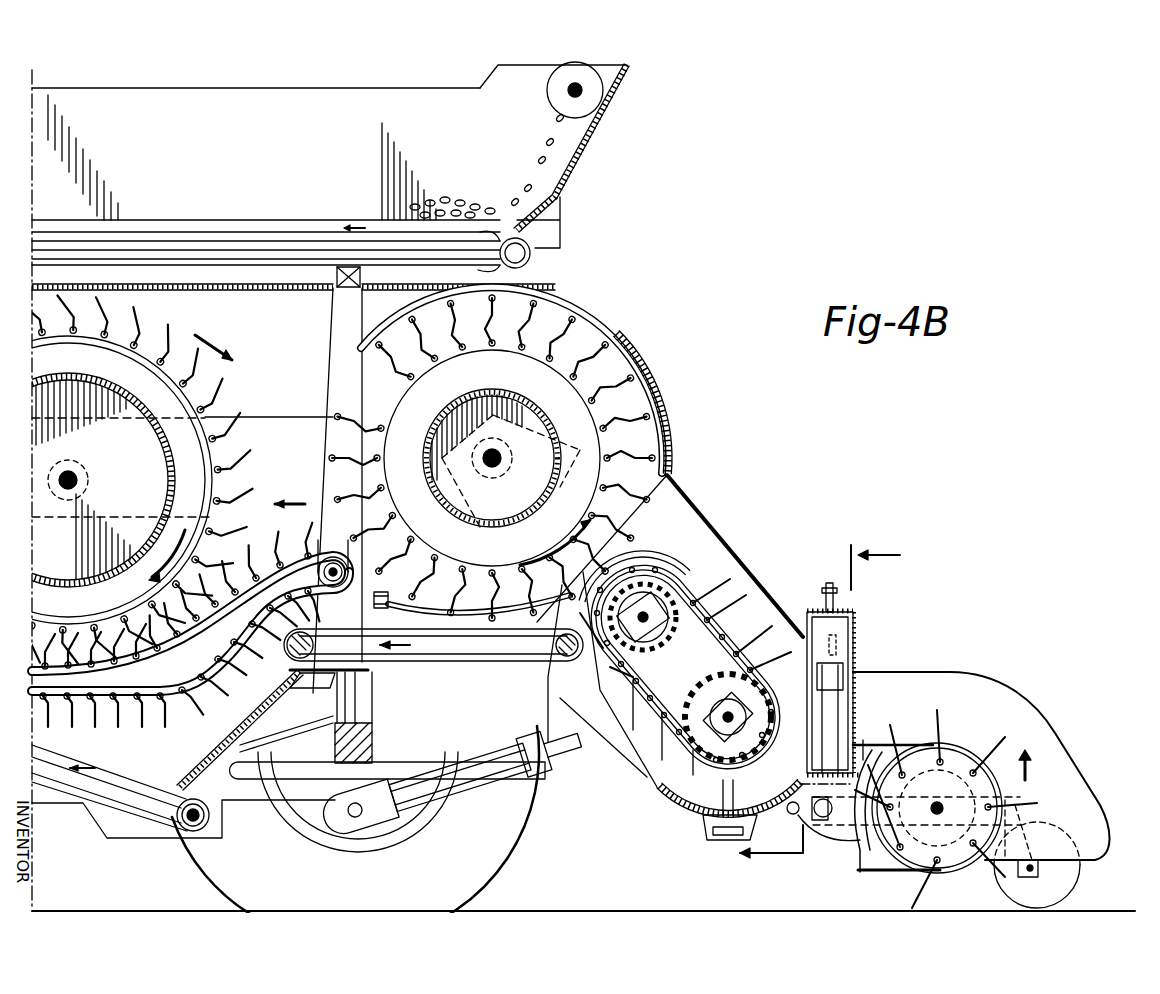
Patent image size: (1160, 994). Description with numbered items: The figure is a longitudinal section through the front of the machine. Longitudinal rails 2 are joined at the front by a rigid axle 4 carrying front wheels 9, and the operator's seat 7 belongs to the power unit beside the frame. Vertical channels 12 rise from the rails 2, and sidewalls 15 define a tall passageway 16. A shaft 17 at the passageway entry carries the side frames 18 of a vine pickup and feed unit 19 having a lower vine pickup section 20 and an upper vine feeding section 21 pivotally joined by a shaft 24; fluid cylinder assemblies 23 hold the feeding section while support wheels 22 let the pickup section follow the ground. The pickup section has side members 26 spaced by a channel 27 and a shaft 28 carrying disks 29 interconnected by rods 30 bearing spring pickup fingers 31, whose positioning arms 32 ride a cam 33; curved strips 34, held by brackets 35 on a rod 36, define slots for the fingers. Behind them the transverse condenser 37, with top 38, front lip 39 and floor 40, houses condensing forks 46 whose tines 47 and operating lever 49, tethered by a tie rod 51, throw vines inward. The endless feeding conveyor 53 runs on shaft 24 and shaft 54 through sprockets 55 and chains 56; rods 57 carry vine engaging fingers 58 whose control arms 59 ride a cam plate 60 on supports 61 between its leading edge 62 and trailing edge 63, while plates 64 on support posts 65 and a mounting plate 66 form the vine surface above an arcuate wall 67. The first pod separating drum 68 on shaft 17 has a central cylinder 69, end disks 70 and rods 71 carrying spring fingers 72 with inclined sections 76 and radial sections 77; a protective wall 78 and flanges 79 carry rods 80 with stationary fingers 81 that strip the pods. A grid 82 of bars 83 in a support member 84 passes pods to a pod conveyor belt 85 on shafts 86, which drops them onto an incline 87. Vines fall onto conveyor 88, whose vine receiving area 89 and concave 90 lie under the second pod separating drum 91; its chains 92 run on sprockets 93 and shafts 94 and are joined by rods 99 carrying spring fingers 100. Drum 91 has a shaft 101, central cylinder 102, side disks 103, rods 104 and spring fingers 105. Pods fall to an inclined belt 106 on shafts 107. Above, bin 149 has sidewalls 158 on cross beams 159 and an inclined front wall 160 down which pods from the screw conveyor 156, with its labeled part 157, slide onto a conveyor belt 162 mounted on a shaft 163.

The longitudinal rails 2 is at (244, 794).
The rigid axle 4 is at (365, 710).
The operator's seat 7 is at (830, 719).
The front wheels 9 is at (534, 825).
The vertical channels 12 is at (340, 310).
The sidewalls 15 is at (138, 295).
The passageway 16 is at (217, 303).
The shaft 17 is at (492, 470).
The side frames 18 is at (723, 533).
The vine pickup and feed unit 19 is at (823, 572).
The vine pickup section 20 is at (979, 674).
The vine feeding section 21 is at (706, 515).
The support wheels 22 is at (1060, 884).
The fluid cylinder assemblies 23 is at (510, 785).
The shaft 24 is at (700, 690).
The side frames 26 is at (1030, 704).
The channel 27 is at (807, 845).
The shaft 28 is at (943, 808).
The disks 29 is at (913, 747).
The rods 30 is at (960, 753).
The vine pickup fingers 31 is at (938, 720).
The positioning arms 32 is at (943, 789).
The cam 33 is at (970, 835).
The curved strips 34 is at (1003, 785).
The supporting brackets 35 is at (850, 873).
The rod 36 is at (825, 828).
The transverse condenser mechanism 37 is at (860, 633).
The top 38 is at (850, 603).
The front lip 39 is at (860, 622).
The floor 40 is at (868, 745).
The condensing forks 46 is at (840, 674).
The tines 47 is at (830, 720).
The operating lever 49 is at (823, 600).
The tie rod 51 is at (826, 586).
The endless feeding conveyor 53 is at (617, 683).
The shaft 54 is at (695, 593).
The sprockets 55 is at (643, 657).
The chains 56 is at (720, 624).
The rods 57 is at (757, 688).
The vine engaging fingers 58 is at (650, 548).
The control arm 59 is at (637, 718).
The cam plate 60 is at (740, 644).
The supports 61 is at (633, 635).
The leading edge 62 is at (740, 778).
The trailing edge 63 is at (647, 570).
The plates 64 is at (723, 587).
The support posts 65 is at (700, 823).
The mounting plate 66 is at (596, 541).
The arcuate wall 67 is at (662, 797).
The first pod separating drum 68 is at (592, 413).
The central cylinder 69 is at (467, 394).
The end disks 70 is at (598, 440).
The rods 71 is at (573, 374).
The spring fingers 72 is at (660, 446).
The inclined sections 76 is at (625, 353).
The radial sections 77 is at (647, 392).
The protective wall 78 is at (663, 413).
The flanges 79 is at (588, 310).
The rods 80 is at (525, 296).
The fingers 81 is at (493, 338).
The grid 82 is at (447, 563).
The bars 83 is at (500, 538).
The support member 84 is at (403, 576).
The pod conveyor belt 85 is at (447, 630).
The shafts 86 is at (533, 664).
The incline 87 is at (253, 710).
The conveyor 88 is at (185, 704).
The vine receiving area 89 is at (292, 549).
The concave section 90 is at (58, 625).
The second pod separating drum 91 is at (238, 390).
The chains 92 is at (212, 690).
The sprockets 93 is at (318, 571).
The shafts 94 is at (343, 552).
The rods 99 is at (177, 673).
The spring fingers 100 is at (258, 513).
The shaft 101 is at (78, 468).
The central cylinder 102 is at (168, 467).
The side disks 103 is at (217, 416).
The rods 104 is at (158, 368).
The spring fingers 105 is at (117, 317).
The belt 106 is at (63, 796).
The shafts 107 is at (186, 838).
The bin 149 is at (179, 88).
The screw conveyor 156 is at (592, 78).
The pulley shaft 157 is at (582, 91).
The sidewalls 158 is at (420, 90).
The cross beams 159 is at (361, 278).
The inclined front wall 160 is at (566, 141).
The conveyor belt 162 is at (310, 237).
The shaft 163 is at (530, 248).